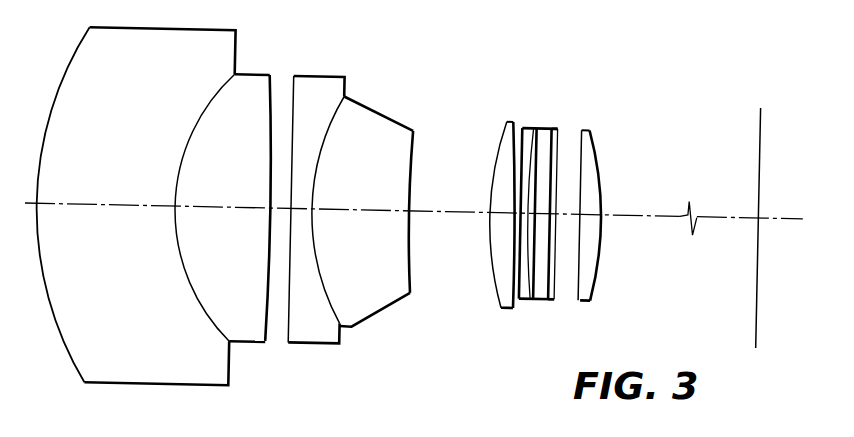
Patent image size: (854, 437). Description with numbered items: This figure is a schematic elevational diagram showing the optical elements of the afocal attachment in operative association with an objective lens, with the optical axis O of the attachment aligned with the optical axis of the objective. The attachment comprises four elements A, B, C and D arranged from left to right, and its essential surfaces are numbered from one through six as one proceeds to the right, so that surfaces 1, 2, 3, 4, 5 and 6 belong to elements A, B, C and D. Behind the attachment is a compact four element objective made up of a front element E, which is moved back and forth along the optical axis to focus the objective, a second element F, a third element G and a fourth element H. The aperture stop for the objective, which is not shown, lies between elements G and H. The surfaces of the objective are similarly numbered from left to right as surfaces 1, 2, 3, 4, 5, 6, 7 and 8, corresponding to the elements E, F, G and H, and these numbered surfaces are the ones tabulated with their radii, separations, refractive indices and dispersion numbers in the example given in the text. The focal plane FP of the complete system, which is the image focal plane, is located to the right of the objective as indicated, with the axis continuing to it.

The first surface 1 is at (75, 367).
The second surface 2 is at (215, 325).
The third surface 3 is at (267, 317).
The fourth surface 4 is at (289, 315).
The fifth surface 5 is at (332, 304).
The sixth surface 6 is at (408, 278).
The seventh surface 7 is at (583, 287).
The eighth surface 8 is at (597, 273).
The element A is at (105, 27).
The element B is at (248, 74).
The element C is at (312, 76).
The element D is at (374, 111).
The front element E is at (489, 242).
The second element F is at (535, 128).
The third element G is at (548, 244).
The fourth element H is at (602, 169).
The optical axis O is at (446, 212).
The focal plane FP is at (760, 216).